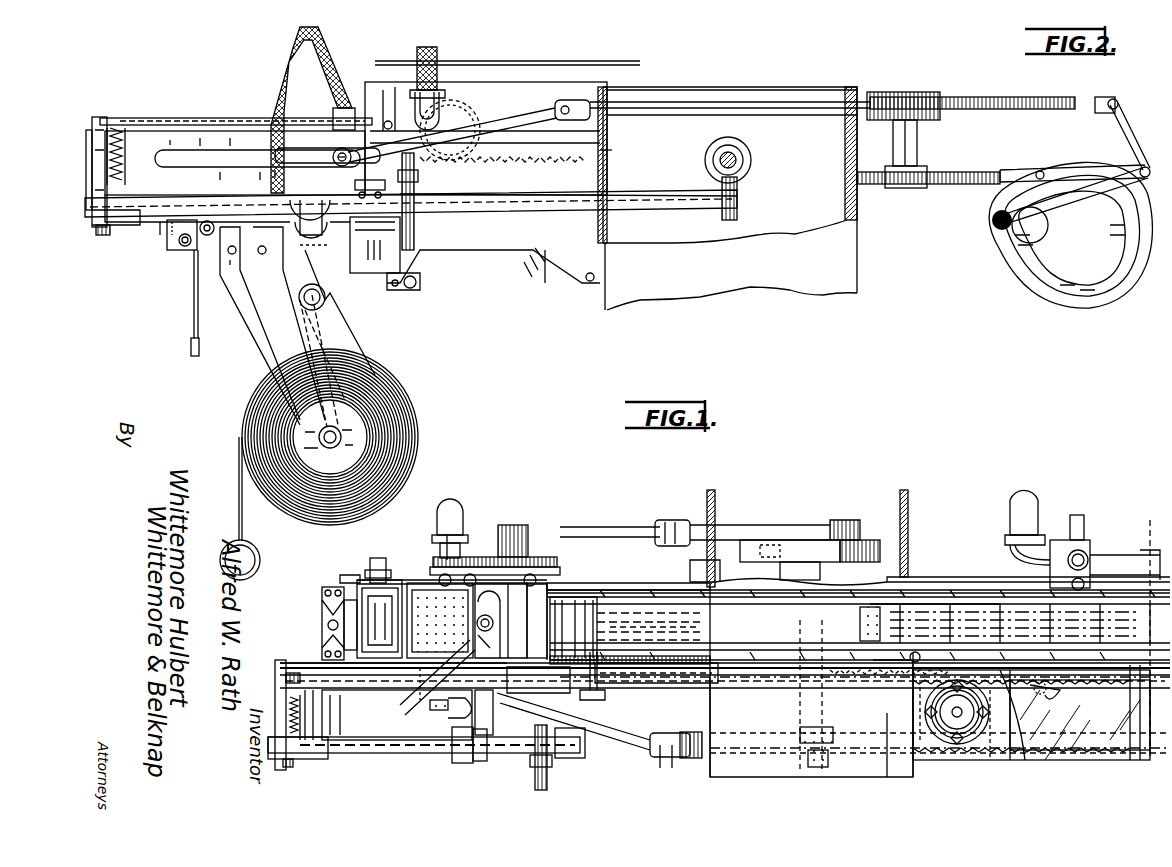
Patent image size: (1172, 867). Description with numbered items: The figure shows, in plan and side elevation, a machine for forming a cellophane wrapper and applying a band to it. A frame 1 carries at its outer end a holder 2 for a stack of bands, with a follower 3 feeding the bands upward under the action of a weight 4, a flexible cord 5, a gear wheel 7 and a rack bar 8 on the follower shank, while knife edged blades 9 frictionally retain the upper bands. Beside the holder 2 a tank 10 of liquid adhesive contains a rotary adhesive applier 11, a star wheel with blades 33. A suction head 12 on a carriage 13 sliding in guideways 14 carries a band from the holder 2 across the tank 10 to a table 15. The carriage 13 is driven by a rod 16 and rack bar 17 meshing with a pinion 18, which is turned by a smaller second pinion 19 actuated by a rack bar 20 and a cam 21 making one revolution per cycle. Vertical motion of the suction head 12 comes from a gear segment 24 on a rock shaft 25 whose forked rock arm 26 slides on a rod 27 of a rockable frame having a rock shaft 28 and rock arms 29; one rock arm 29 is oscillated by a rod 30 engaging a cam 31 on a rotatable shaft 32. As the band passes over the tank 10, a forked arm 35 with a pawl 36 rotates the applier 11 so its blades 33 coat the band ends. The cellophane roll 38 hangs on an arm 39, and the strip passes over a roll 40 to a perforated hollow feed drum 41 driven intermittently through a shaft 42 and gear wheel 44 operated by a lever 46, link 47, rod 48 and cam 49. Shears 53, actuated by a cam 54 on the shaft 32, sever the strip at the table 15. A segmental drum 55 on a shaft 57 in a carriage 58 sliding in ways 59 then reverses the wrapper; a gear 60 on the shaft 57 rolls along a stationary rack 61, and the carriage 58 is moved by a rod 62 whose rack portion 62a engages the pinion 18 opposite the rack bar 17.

In FIG. 2, the frame 1 is at (545, 240).
In FIG. 2, the holder 2 is at (165, 222).
In FIG. 1, the holder 2 is at (322, 607).
In FIG. 1, the follower 3 is at (325, 632).
In FIG. 2, the weight 4 is at (199, 350).
In FIG. 2, the flexible cord 5 is at (198, 312).
In FIG. 2, the gear wheel 7 is at (185, 252).
In FIG. 2, the rack bar 8 is at (170, 248).
In FIG. 1, the knife edged blades 9 is at (335, 590).
In FIG. 1, the tank 10 is at (362, 590).
In FIG. 1, the rotary adhesive applier 11 is at (425, 580).
In FIG. 1, the suction head 12 is at (515, 595).
In FIG. 2, the carriage 13 is at (318, 152).
In FIG. 2, the guideways 14 is at (240, 152).
In FIG. 1, the table 15 is at (560, 587).
In FIG. 2, the rod 16 is at (525, 110).
In FIG. 1, the rod 16 is at (608, 725).
In FIG. 2, the rack bar 17 is at (983, 96).
In FIG. 1, the rack bar 17 is at (1003, 748).
In FIG. 2, the pinion 18 is at (912, 92).
In FIG. 1, the pinion 18 is at (975, 725).
In FIG. 2, the second pinion 19 is at (912, 188).
In FIG. 1, the second pinion 19 is at (1020, 748).
In FIG. 2, the rack bar 20 is at (972, 170).
In FIG. 1, the rack bar 20 is at (1010, 690).
In FIG. 2, the cam 21 is at (1085, 300).
In FIG. 1, the gear segment 24 is at (494, 628).
In FIG. 1, the rock shaft 25 is at (492, 646).
In FIG. 1, the forked rock arm 26 is at (445, 655).
In FIG. 1, the rod 27 is at (375, 688).
In FIG. 2, the rock shaft 28 is at (178, 118).
In FIG. 1, the rock shaft 28 is at (345, 688).
In FIG. 2, the rock arms 29 is at (118, 118).
In FIG. 1, the rock arms 29 is at (278, 680).
In FIG. 2, the rod 30 is at (95, 160).
In FIG. 1, the rod 30 is at (275, 705).
In FIG. 2, the cam 31 is at (103, 235).
In FIG. 1, the cam 31 is at (290, 765).
In FIG. 2, the rotatable shaft 32 is at (175, 205).
In FIG. 1, the rotatable shaft 32 is at (360, 745).
In FIG. 1, the blades 33 is at (380, 558).
In FIG. 1, the forked arm 35 is at (455, 512).
In FIG. 1, the pawl 36 is at (446, 530).
In FIG. 2, the roll 38 is at (400, 415).
In FIG. 2, the arm 39 is at (260, 348).
In FIG. 2, the roll 40 is at (325, 298).
In FIG. 2, the perforated hollow feed drum 41 is at (380, 268).
In FIG. 1, the shaft 42 is at (470, 556).
In FIG. 1, the gear wheel 44 is at (500, 556).
In FIG. 1, the lever 46 is at (530, 555).
In FIG. 1, the link 47 is at (617, 527).
In FIG. 1, the rod 48 is at (735, 525).
In FIG. 1, the cam 49 is at (855, 540).
In FIG. 1, the shears 53 is at (600, 590).
In FIG. 2, the cam 54 is at (410, 225).
In FIG. 1, the cam 54 is at (547, 768).
In FIG. 2, the segmental drum 55 is at (455, 105).
In FIG. 1, the segmental drum 55 is at (597, 600).
In FIG. 1, the shaft 57 is at (630, 613).
In FIG. 2, the carriage 58 is at (418, 110).
In FIG. 1, the carriage 58 is at (640, 640).
In FIG. 2, the ways 59 is at (490, 148).
In FIG. 1, the ways 59 is at (670, 683).
In FIG. 2, the gear 60 is at (437, 62).
In FIG. 1, the gear 60 is at (592, 680).
In FIG. 2, the stationary rack 61 is at (612, 150).
In FIG. 1, the stationary rack 61 is at (712, 660).
In FIG. 1, the rod 62 is at (755, 680).
In FIG. 1, the rack portion 62a is at (880, 690).